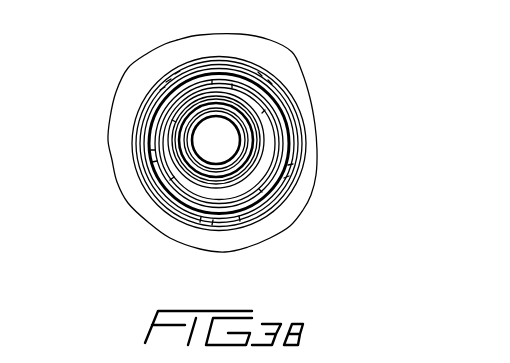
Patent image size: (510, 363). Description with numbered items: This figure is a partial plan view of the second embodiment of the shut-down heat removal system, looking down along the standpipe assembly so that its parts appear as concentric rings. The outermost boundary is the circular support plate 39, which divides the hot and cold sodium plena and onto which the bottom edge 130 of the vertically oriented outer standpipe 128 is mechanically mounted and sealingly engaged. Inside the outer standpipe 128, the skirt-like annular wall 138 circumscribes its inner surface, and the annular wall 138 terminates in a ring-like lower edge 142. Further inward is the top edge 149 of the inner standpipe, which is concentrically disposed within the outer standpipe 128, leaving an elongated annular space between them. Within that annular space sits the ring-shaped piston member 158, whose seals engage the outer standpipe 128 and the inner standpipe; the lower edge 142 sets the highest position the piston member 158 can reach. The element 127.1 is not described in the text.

The circular support plate 39 is at (280, 217).
The outer standpipe 128 is at (141, 129).
The bottom edge of the outer standpipe 130 is at (298, 143).
The annular wall 138 is at (158, 172).
The ring-like lower edge 142 is at (270, 168).
The top edge of the inner standpipe 149 is at (241, 140).
The inner winding layer 127.1 is at (244, 134).
The ring-shaped piston member 158 is at (186, 104).